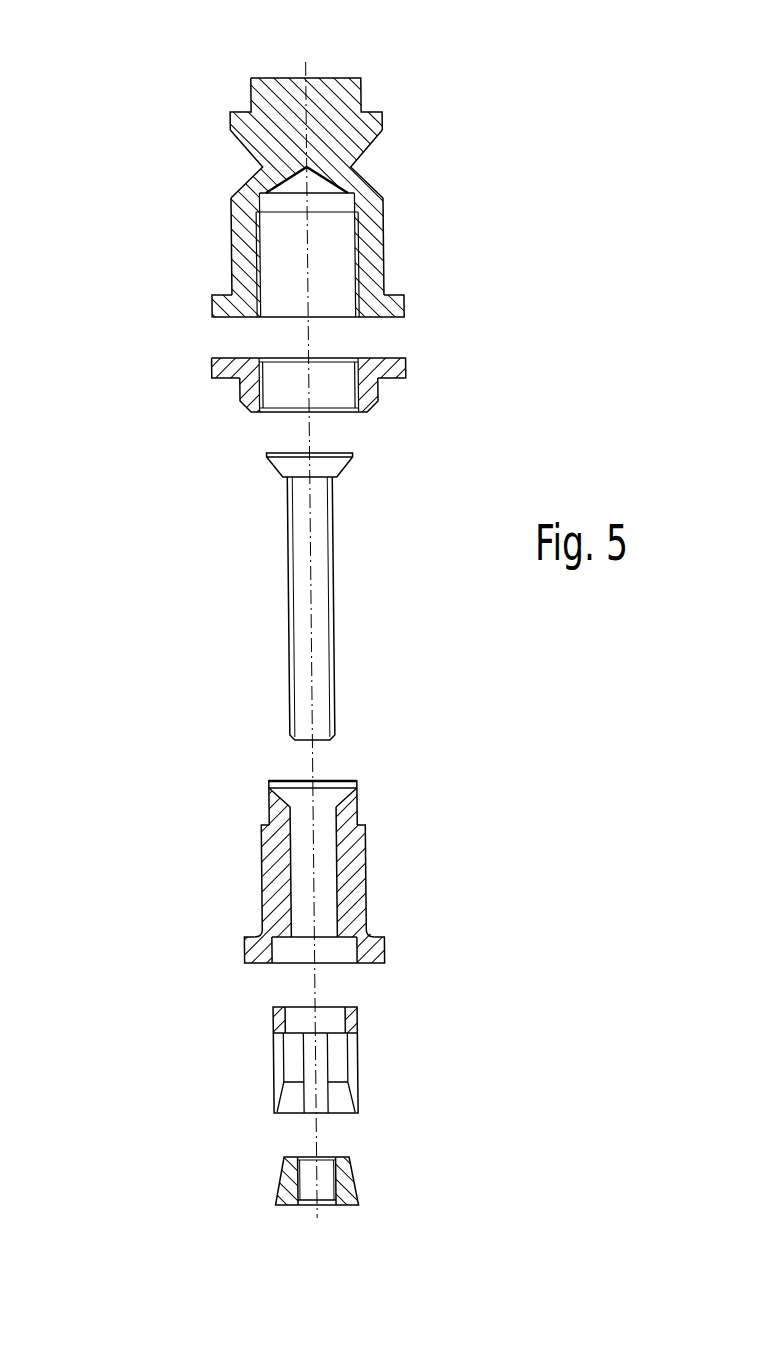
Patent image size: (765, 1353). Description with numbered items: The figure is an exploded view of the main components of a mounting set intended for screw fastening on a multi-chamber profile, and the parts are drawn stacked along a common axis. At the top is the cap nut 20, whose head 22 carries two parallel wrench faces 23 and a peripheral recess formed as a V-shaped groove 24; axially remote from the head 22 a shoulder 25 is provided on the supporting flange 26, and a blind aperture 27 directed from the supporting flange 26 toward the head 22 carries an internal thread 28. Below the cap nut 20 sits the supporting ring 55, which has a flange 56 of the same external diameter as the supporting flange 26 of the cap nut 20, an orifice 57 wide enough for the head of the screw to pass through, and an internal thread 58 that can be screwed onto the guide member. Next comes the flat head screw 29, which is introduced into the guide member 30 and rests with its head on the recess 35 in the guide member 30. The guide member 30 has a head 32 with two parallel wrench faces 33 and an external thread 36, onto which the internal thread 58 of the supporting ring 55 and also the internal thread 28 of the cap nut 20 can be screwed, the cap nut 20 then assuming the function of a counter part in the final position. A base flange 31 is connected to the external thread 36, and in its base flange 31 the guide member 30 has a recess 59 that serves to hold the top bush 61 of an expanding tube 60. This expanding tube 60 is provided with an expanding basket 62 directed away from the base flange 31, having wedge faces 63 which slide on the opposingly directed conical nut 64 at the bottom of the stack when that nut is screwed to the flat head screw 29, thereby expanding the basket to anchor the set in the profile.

The cap nut 20 is at (115, 96).
The head 22 is at (362, 58).
The wrench faces 23 is at (365, 92).
The V-shaped groove 24 is at (263, 160).
The shoulder 25 is at (398, 293).
The supporting flange 26 is at (407, 310).
The blind aperture 27 is at (352, 199).
The internal thread 28 is at (260, 252).
The supporting ring 55 is at (160, 358).
The flange 56 is at (407, 363).
The orifice 57 is at (280, 394).
The internal thread 58 is at (382, 395).
The flat head screw 29 is at (290, 547).
The guide member 30 is at (132, 812).
The head 32 is at (350, 770).
The wrench faces 33 is at (268, 806).
The recess 35 is at (346, 800).
The external thread 36 is at (369, 863).
The base flange 31 is at (387, 948).
The recess 59 is at (344, 950).
The expanding tube 60 is at (132, 1107).
The top bush 61 is at (273, 1022).
The expanding basket 62 is at (357, 1064).
The wedge faces 63 is at (337, 1098).
The conical nut 64 is at (353, 1187).